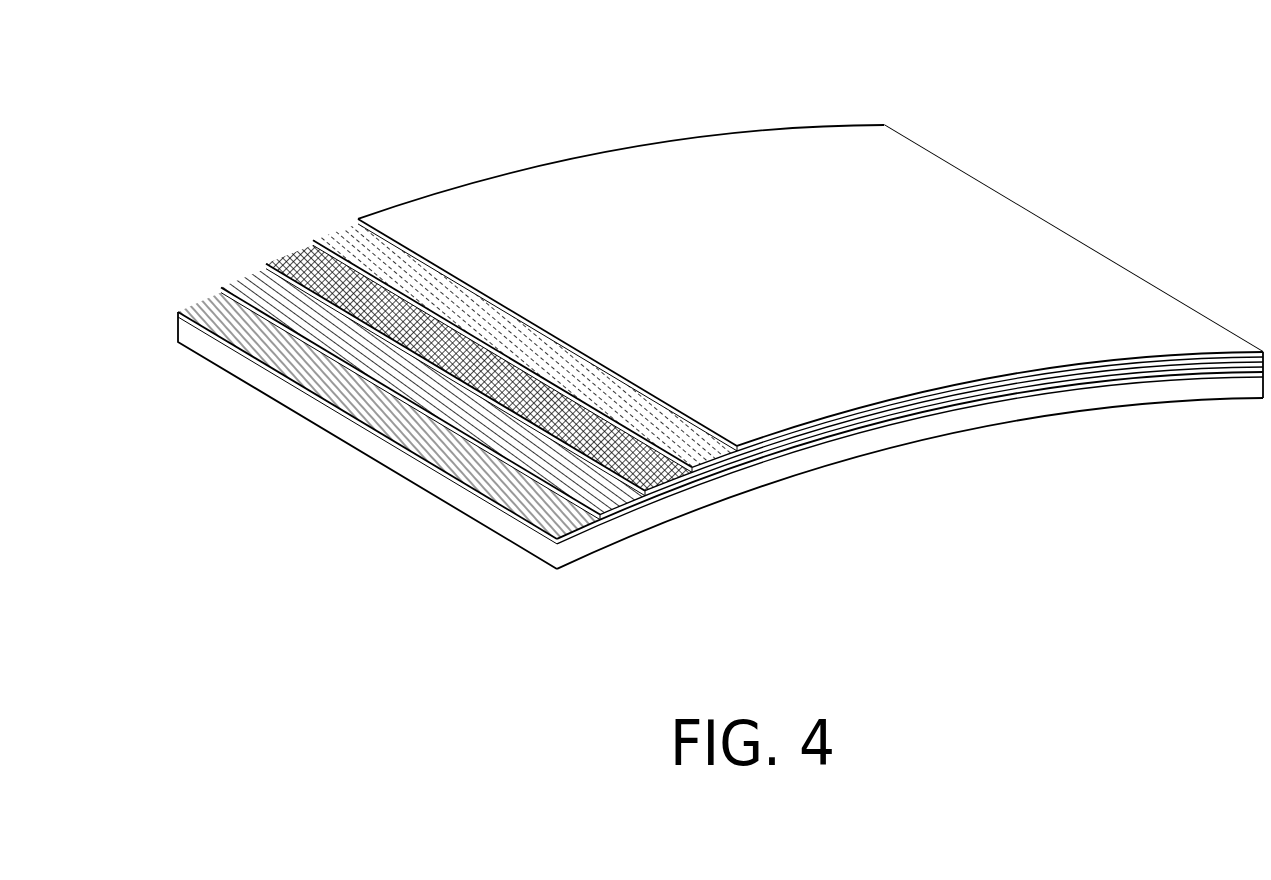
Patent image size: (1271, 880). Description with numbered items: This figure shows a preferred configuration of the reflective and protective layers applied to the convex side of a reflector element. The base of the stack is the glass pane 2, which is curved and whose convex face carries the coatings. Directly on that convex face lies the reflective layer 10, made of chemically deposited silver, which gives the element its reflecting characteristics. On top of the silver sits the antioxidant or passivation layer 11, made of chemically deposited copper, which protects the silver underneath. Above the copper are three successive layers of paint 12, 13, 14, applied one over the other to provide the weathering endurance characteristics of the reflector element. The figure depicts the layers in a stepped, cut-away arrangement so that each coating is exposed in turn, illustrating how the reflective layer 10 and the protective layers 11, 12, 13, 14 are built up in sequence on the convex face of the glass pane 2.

The glass pane 2 is at (903, 447).
The reflective layer 10 is at (178, 312).
The antioxidant or passivation layer 11 is at (221, 288).
The paint layer 12 is at (266, 264).
The paint layer 13 is at (313, 240).
The paint layer 14 is at (358, 219).